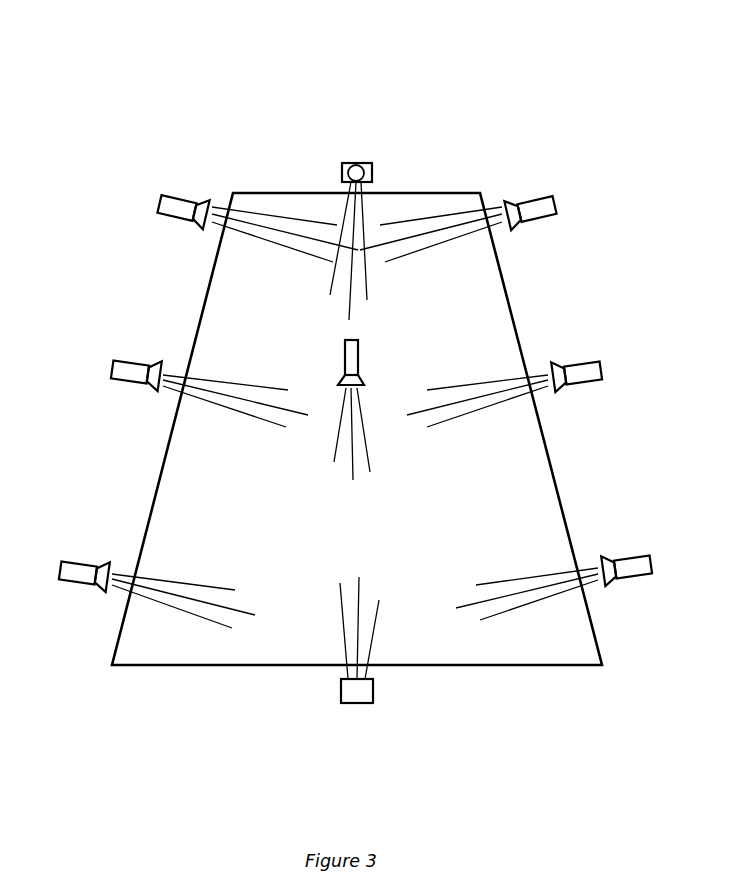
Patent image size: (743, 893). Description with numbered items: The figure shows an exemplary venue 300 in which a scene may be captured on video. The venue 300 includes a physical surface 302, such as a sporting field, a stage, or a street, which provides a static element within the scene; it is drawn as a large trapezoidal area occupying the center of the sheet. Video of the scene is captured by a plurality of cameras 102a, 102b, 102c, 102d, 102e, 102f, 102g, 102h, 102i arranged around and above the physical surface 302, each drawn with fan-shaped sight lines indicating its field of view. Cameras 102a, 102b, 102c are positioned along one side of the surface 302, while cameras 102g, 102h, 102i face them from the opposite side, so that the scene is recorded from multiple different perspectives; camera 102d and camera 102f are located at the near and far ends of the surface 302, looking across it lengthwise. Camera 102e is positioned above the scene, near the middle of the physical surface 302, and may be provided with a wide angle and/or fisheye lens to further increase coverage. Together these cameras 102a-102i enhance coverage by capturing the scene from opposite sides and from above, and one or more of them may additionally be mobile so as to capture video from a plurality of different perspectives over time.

The venue 300 is at (521, 113).
The physical surface 302 is at (248, 531).
The camera 102a is at (172, 197).
The camera 102b is at (118, 362).
The camera 102c is at (73, 567).
The camera 102d is at (348, 162).
The camera 102e is at (344, 351).
The camera 102f is at (360, 704).
The camera 102g is at (528, 201).
The camera 102h is at (573, 366).
The camera 102i is at (620, 560).